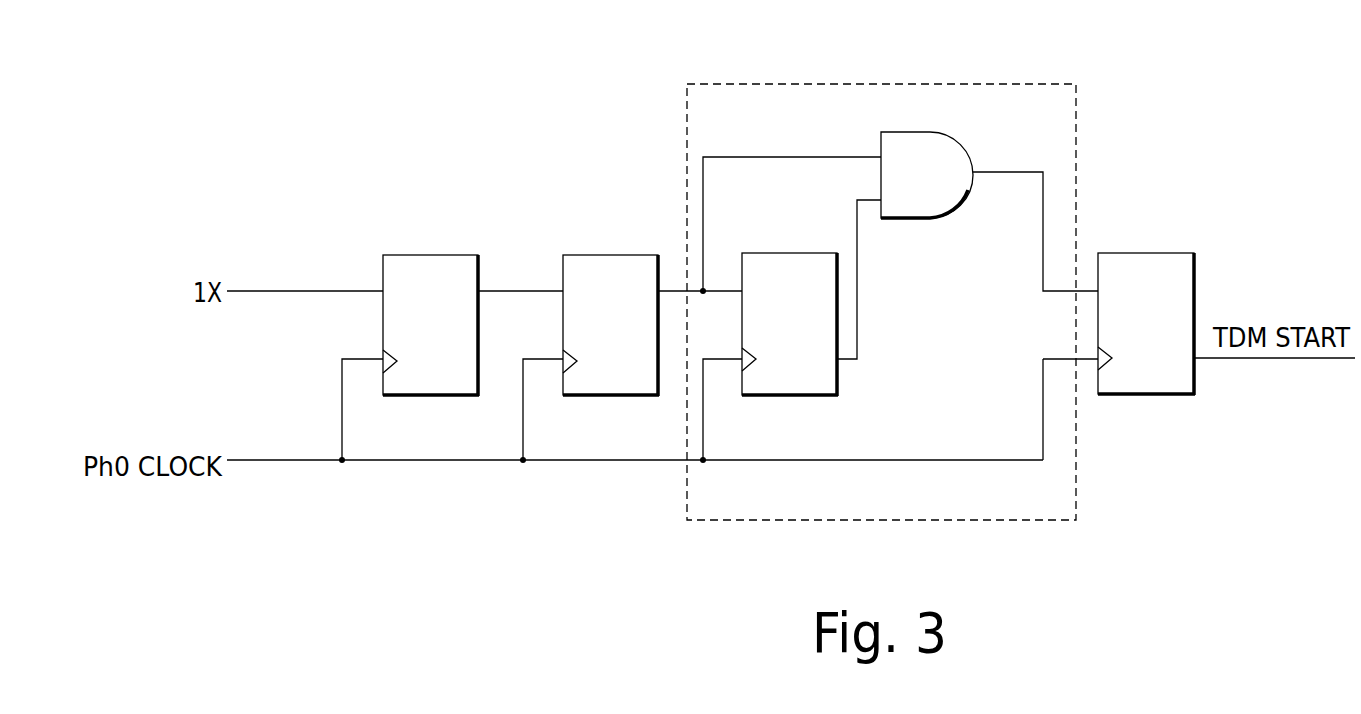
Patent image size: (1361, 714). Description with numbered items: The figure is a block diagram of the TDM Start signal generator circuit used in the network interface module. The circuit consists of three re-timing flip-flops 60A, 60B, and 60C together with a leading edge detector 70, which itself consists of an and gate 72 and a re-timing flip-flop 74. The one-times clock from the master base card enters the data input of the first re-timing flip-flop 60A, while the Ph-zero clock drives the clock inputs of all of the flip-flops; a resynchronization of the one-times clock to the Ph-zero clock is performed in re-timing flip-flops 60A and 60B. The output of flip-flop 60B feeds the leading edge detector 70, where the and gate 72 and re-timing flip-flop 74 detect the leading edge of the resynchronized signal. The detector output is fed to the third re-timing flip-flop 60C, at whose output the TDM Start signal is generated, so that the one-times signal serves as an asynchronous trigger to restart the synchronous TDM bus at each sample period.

The re-timing flip-flop 60A is at (460, 398).
The re-timing flip-flop 60B is at (638, 398).
The re-timing flip-flop 60C is at (1175, 397).
The leading edge detector 70 is at (912, 92).
The and gate 72 is at (957, 155).
The re-timing flip-flop 74 is at (817, 397).